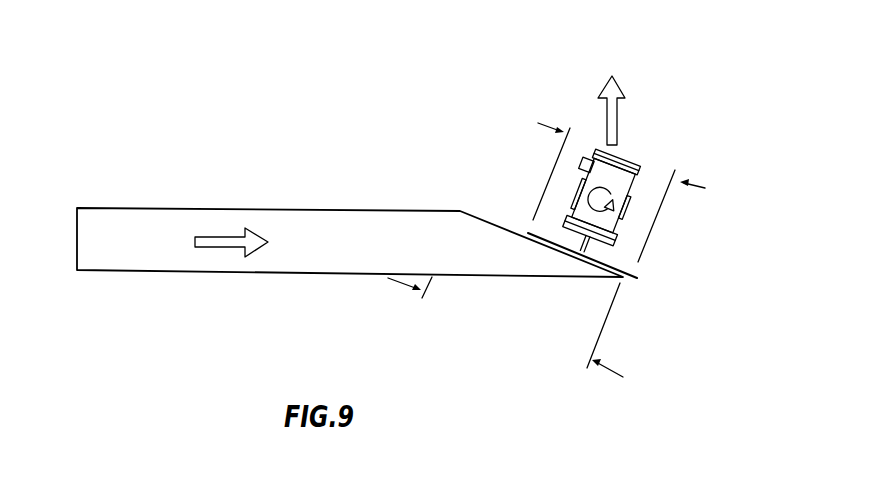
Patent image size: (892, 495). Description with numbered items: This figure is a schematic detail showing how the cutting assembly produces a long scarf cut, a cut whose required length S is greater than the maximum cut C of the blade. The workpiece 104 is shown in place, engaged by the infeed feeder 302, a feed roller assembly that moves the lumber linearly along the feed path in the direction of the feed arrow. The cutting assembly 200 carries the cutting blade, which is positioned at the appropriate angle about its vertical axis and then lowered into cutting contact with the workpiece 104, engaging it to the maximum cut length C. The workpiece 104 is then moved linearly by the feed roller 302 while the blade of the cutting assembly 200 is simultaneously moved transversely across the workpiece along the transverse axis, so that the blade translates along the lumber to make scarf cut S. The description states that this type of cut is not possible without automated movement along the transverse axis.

The workpiece 104 is at (119, 205).
The infeed feeder 302 is at (304, 225).
The tool unit 200 is at (630, 165).